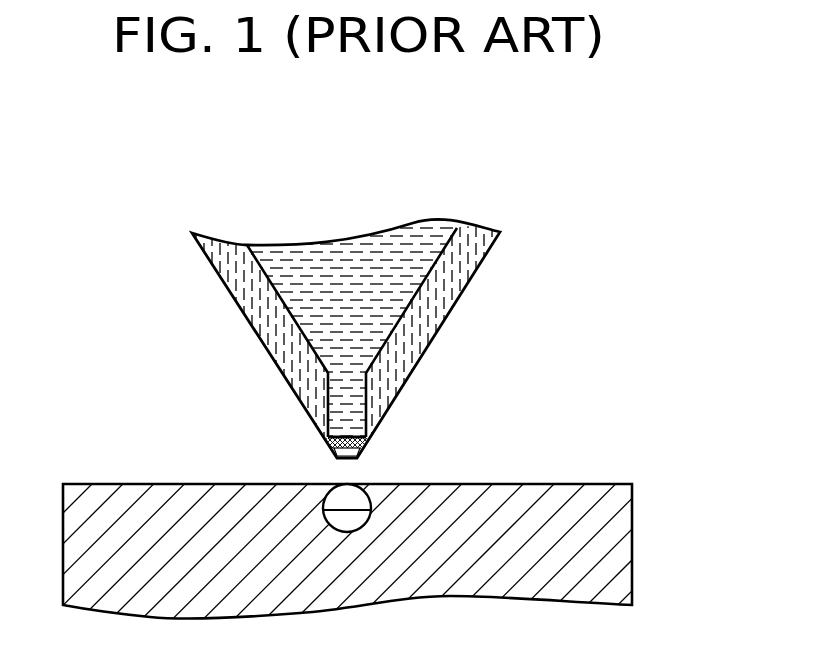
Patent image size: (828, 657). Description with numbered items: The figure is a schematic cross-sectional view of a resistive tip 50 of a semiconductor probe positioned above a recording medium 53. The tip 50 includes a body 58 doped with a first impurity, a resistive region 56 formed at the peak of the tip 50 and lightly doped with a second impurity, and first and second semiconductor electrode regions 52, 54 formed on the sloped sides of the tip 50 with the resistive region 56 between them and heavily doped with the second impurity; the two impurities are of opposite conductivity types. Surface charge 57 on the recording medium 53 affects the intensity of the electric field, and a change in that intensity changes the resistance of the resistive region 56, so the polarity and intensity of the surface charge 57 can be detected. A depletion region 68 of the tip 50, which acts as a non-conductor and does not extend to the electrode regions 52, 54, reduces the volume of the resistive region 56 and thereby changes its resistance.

The tip 50 is at (288, 320).
The first semiconductor electrode region 52 is at (290, 365).
The second semiconductor electrode region 54 is at (400, 365).
The resistive region 56 is at (328, 440).
The surface charge 57 is at (377, 487).
The body 58 is at (350, 253).
The depletion region 68 is at (335, 453).
The recording medium 53 is at (622, 533).